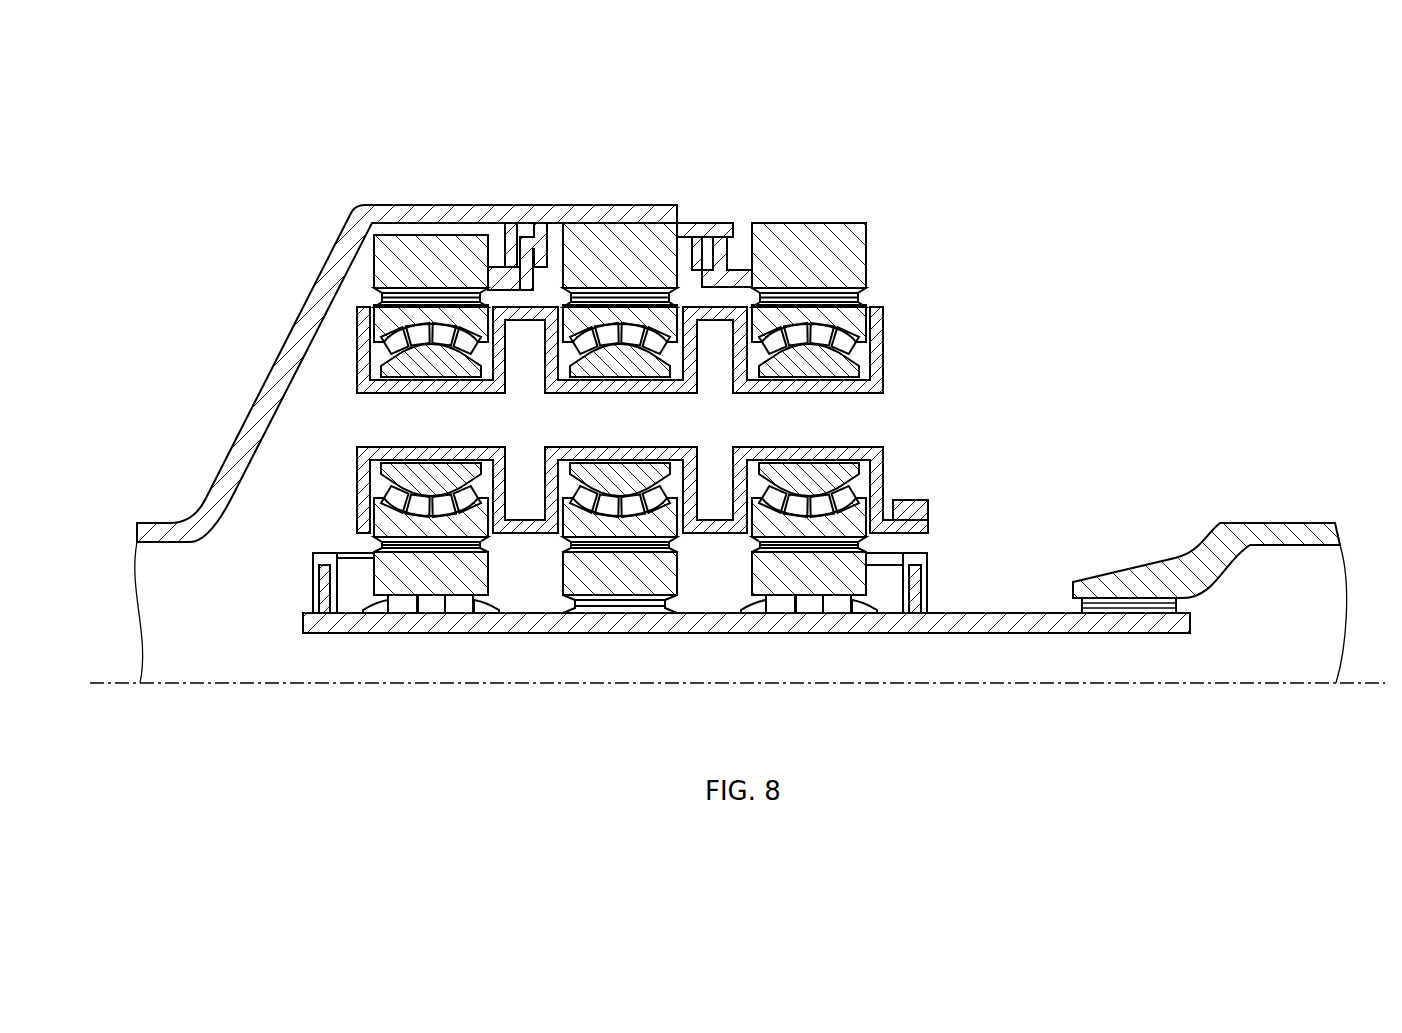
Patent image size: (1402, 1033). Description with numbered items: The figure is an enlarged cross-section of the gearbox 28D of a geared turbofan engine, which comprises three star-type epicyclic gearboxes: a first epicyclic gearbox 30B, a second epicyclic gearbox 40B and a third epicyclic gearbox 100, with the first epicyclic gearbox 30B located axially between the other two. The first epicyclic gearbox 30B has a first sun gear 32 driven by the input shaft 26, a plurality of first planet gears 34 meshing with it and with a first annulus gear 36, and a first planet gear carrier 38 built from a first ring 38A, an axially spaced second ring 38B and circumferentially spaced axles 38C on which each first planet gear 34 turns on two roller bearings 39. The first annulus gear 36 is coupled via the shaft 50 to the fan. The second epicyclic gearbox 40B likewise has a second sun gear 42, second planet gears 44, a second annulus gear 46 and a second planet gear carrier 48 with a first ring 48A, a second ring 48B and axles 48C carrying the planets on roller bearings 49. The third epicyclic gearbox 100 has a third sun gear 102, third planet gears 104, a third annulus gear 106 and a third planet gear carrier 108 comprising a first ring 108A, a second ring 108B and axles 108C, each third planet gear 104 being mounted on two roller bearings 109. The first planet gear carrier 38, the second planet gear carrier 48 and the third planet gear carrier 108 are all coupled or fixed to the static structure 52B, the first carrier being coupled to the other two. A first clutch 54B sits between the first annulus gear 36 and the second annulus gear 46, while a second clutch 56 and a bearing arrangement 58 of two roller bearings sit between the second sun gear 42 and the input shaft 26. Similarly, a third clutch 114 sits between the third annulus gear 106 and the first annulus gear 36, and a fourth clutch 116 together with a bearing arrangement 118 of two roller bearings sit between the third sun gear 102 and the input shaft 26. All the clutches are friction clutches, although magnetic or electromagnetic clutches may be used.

The input shaft 26 is at (1300, 530).
The gearbox 28D is at (737, 414).
The first epicyclic gearbox 30B is at (620, 264).
The first sun gear 32 is at (653, 595).
The first planet gears 34 is at (607, 310).
The first annulus gear 36 is at (654, 246).
The first planet gear carrier 38 is at (540, 497).
The first ring 38A is at (541, 467).
The second ring 38B is at (695, 340).
The axles 38C is at (581, 390).
The planet gear bearings 39 is at (637, 348).
The second epicyclic gearbox 40B is at (852, 300).
The second sun gear 42 is at (827, 573).
The second planet gears 44 is at (853, 308).
The second annulus gear 46 is at (786, 243).
The second planet gear carrier 48 is at (894, 329).
The first ring 48A is at (735, 337).
The second ring 48B is at (887, 350).
The axles 48C is at (853, 392).
The planet gear bearings 49 is at (821, 348).
The shaft 50 is at (187, 538).
The static structure 52B is at (910, 508).
The first clutch 54B is at (712, 210).
The second clutch 56 is at (940, 550).
The bearing arrangement 58 is at (828, 610).
The third epicyclic gearbox 100 is at (461, 216).
The third sun gear 102 is at (477, 587).
The third planet gears 104 is at (397, 320).
The third annulus gear 106 is at (405, 260).
The third planet gear carrier 108 is at (343, 356).
The first ring 108A is at (357, 371).
The second ring 108B is at (506, 362).
The axles 108C is at (397, 388).
The planet gear bearings 109 is at (455, 348).
The third clutch 114 is at (518, 213).
The fourth clutch 116 is at (302, 598).
The bearing arrangement 118 is at (443, 610).